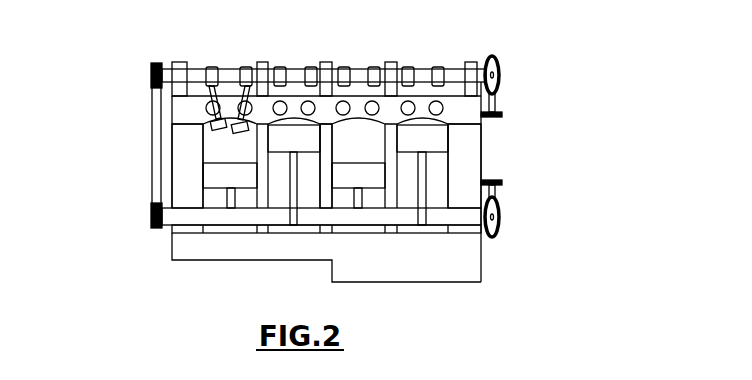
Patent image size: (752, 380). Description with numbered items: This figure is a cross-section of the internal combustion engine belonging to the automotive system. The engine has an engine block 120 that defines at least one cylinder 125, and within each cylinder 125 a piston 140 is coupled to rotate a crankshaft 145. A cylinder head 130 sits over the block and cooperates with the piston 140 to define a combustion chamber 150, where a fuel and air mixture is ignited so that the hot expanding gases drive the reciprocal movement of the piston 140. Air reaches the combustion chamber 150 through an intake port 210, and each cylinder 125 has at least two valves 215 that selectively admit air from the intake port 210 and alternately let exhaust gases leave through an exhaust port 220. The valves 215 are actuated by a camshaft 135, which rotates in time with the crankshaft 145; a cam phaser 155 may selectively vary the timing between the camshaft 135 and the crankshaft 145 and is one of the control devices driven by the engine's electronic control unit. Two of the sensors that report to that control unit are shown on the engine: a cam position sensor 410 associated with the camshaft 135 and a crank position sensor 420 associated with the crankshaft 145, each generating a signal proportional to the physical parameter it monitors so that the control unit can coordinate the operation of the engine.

The engine block 120 is at (170, 165).
The cylinder 125 is at (333, 147).
The cylinder head 130 is at (203, 119).
The camshaft 135 is at (224, 67).
The piston 140 is at (360, 175).
The crankshaft 145 is at (197, 219).
The combustion chamber 150 is at (423, 124).
The cam phaser 155 is at (150, 78).
The intake port 210 is at (350, 100).
The valves 215 is at (236, 125).
The exhaust port 220 is at (303, 102).
The cam position sensor 410 is at (500, 113).
The crank position sensor 420 is at (499, 183).